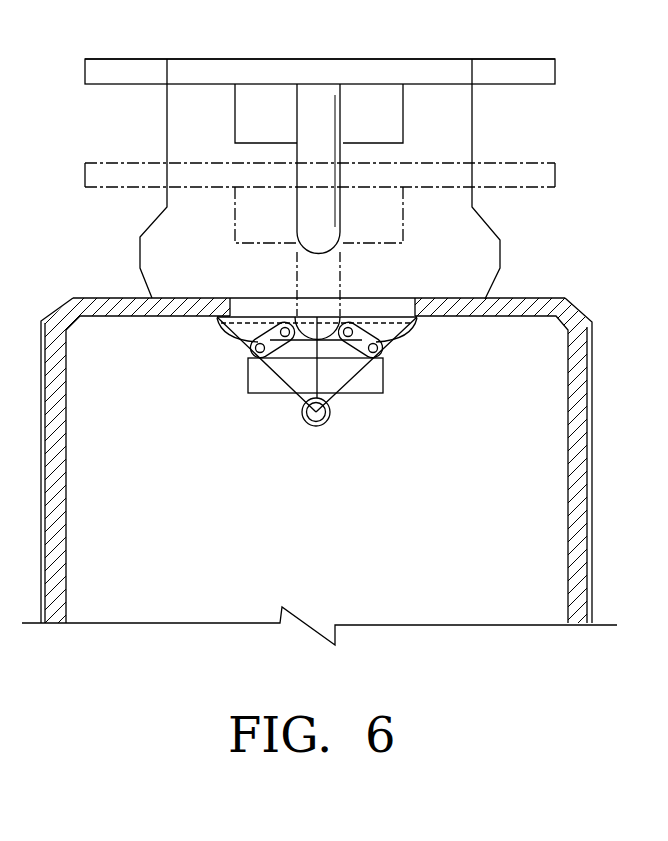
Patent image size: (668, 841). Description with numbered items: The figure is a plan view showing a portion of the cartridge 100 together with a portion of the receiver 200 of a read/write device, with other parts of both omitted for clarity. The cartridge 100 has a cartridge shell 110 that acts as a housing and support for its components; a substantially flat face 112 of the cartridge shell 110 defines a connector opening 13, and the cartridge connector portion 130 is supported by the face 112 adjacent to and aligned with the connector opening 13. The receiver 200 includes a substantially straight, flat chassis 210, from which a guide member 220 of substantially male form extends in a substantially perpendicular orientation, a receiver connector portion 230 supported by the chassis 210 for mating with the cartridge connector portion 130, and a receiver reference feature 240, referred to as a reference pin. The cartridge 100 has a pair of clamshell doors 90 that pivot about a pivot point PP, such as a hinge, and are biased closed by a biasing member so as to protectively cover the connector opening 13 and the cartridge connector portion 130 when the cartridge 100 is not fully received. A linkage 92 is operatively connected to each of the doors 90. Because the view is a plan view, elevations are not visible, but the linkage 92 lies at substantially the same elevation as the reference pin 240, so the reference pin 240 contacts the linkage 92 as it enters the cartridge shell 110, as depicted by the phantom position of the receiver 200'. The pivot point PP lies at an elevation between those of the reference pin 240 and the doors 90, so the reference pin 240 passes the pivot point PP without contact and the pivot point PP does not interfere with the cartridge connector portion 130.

The cartridge 100 is at (334, 462).
The cartridge shell 110 is at (334, 462).
The face 112 is at (112, 296).
The connector opening 13 is at (270, 305).
The receiver 200 is at (362, 73).
The receiver (phantom position) 200' is at (365, 176).
The chassis 210 is at (451, 72).
The guide member 220 is at (483, 257).
The receiver connector portion 230 is at (392, 130).
The receiver reference feature 240 is at (317, 232).
The cartridge connector portion 130 is at (318, 382).
The door 90 is at (241, 347).
The linkage 92 is at (243, 341).
The pivot point PP is at (314, 414).